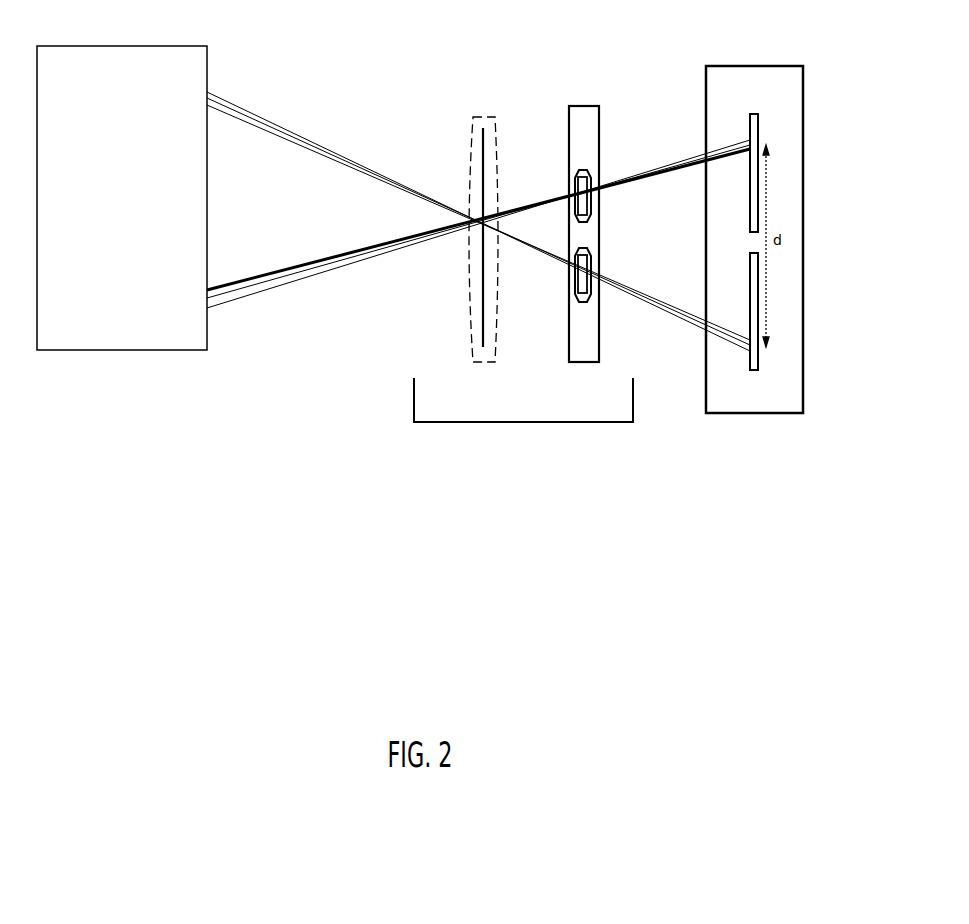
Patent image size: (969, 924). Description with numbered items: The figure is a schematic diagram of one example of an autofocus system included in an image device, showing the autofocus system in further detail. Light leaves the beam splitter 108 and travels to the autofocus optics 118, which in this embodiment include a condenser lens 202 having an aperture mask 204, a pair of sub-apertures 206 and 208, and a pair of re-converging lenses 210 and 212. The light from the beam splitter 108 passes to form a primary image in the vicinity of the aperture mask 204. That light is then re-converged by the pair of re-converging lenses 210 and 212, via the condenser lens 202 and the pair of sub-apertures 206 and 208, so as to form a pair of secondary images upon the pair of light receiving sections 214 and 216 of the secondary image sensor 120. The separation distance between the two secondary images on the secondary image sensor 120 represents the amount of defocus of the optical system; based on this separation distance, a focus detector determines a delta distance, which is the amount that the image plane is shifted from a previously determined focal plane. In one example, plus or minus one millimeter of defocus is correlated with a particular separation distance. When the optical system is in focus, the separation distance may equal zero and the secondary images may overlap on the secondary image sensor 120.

The beam splitter 108 is at (122, 198).
The autofocus optics 118 is at (529, 422).
The secondary image sensor 120 is at (778, 63).
The condenser lens 202 is at (490, 117).
The aperture mask 204 is at (483, 188).
The sub-aperture 206 is at (592, 210).
The sub-aperture 208 is at (592, 290).
The re-converging lens 210 is at (576, 300).
The re-converging lens 212 is at (577, 207).
The light receiving section 214 is at (758, 137).
The light receiving section 216 is at (758, 300).